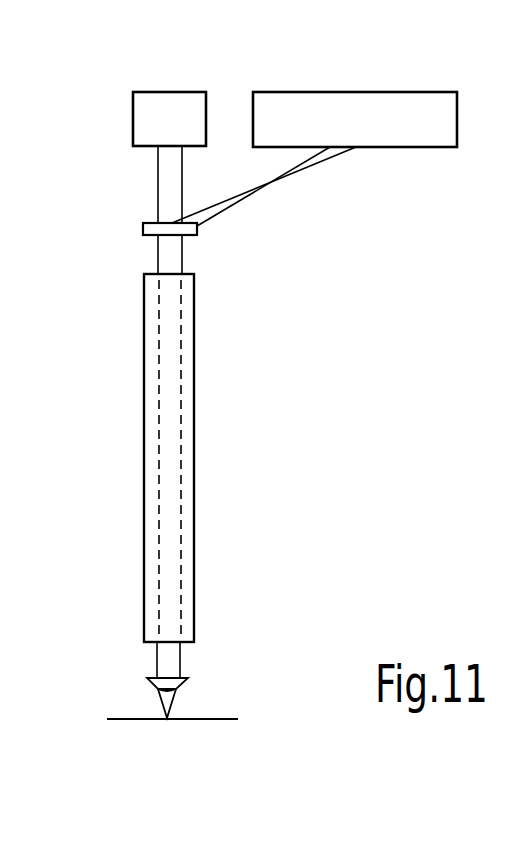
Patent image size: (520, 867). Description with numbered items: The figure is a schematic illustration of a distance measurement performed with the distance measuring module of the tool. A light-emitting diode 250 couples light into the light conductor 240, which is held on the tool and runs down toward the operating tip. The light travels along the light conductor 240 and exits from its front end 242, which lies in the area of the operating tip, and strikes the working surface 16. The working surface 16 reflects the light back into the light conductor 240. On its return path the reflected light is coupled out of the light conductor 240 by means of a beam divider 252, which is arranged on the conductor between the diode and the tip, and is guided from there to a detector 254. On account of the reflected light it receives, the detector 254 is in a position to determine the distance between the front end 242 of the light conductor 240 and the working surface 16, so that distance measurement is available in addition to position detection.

The light-emitting diode 250 is at (146, 100).
The detector 254 is at (373, 103).
The beam divider 252 is at (198, 229).
The light conductor 240 is at (188, 442).
The end of the light conductor 242 is at (183, 643).
The working surface 16 is at (123, 721).